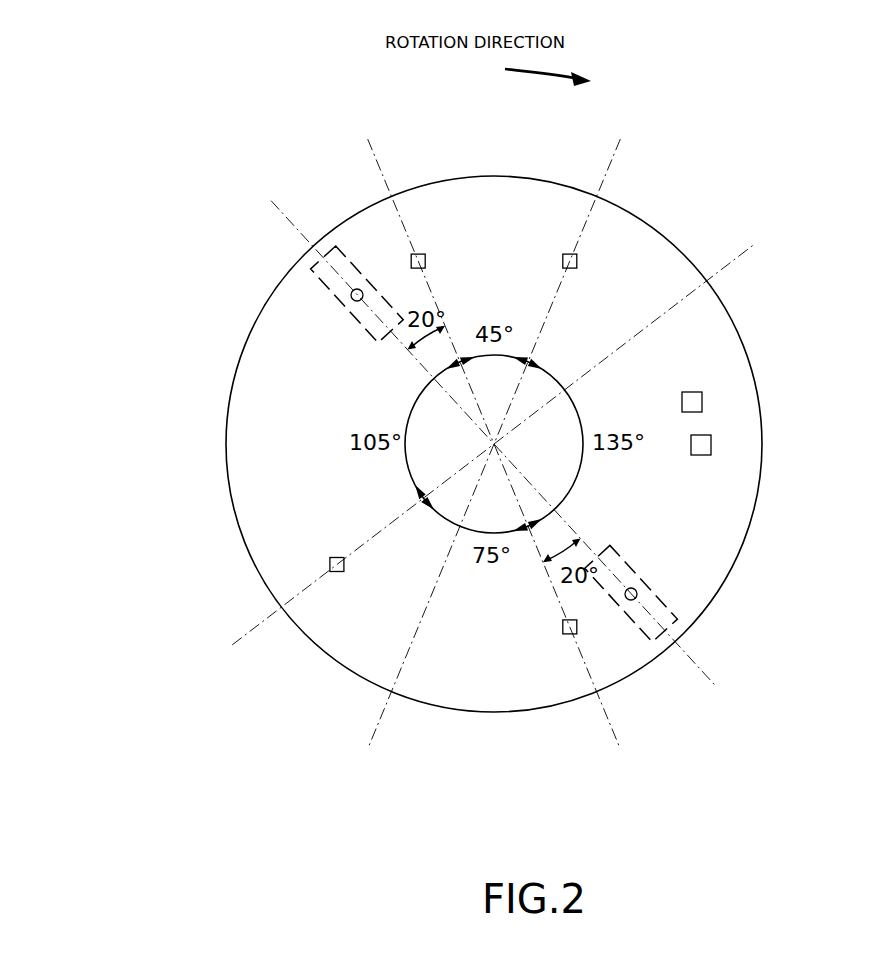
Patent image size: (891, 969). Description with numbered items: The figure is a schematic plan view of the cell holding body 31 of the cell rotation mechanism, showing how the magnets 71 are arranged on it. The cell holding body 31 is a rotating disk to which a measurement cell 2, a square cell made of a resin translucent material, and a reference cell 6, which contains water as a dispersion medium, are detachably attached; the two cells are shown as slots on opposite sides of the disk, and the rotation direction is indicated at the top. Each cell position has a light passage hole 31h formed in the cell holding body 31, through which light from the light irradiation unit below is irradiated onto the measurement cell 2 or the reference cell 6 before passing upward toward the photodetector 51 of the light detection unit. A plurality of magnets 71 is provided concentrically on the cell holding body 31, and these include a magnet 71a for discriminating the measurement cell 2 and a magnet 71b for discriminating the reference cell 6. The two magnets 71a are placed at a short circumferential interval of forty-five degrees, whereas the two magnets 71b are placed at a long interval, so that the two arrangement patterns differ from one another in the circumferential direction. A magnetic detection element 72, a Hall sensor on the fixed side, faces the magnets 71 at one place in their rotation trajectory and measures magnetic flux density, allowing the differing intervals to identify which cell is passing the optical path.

The measurement cell 2 is at (352, 263).
The reference cell 6 is at (665, 600).
The cell holding body 31 is at (226, 445).
The light passage hole 31h is at (353, 300).
The photodetector 51 is at (711, 445).
The magnets 71 is at (443, 446).
The magnet for discriminating the measurement cell 71a is at (418, 253).
The magnet for discriminating the reference cell 71b is at (330, 566).
The magnetic detection element 72 is at (702, 402).